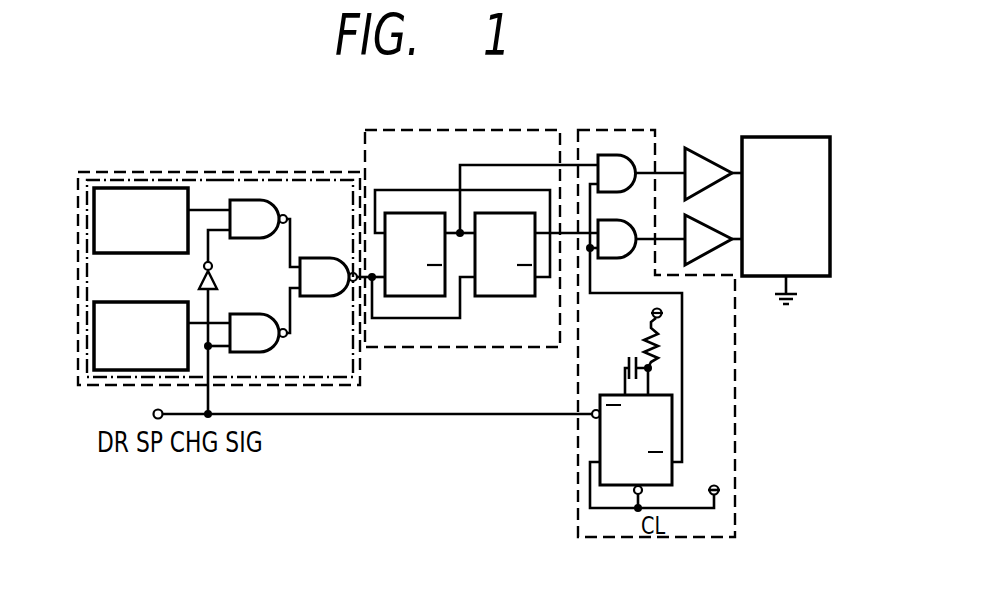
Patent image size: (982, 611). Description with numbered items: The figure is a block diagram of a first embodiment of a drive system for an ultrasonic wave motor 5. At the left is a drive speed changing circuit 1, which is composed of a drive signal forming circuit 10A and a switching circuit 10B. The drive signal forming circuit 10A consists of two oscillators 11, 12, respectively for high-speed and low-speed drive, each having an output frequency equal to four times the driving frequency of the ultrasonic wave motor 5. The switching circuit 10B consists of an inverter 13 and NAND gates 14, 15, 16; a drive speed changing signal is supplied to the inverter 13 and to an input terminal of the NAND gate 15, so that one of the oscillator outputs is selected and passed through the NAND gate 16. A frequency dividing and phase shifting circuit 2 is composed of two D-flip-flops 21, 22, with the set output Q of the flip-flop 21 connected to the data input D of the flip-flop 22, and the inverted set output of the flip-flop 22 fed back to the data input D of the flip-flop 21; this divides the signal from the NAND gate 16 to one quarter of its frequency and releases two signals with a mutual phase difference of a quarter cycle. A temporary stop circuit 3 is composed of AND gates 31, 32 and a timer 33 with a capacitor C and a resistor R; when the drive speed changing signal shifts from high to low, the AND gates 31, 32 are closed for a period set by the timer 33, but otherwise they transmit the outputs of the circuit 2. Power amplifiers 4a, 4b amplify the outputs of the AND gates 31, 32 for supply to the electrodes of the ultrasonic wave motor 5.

The drive speed changing circuit 1 is at (128, 172).
The drive signal forming circuit 10A is at (80, 206).
The switching circuit 10B is at (262, 176).
The oscillator 11 is at (134, 255).
The oscillator 12 is at (146, 302).
The inverter 13 is at (218, 278).
The NAND gate 14 is at (270, 204).
The NAND gate 15 is at (268, 349).
The NAND gate 16 is at (312, 258).
The frequency dividing and phase shifting circuit 2 is at (524, 130).
The D-flip-flop 21 is at (406, 213).
The D-flip-flop 22 is at (512, 296).
The temporary stop circuit 3 is at (622, 130).
The AND gate 31 is at (618, 160).
The AND gate 32 is at (617, 224).
The power amplifier 4a is at (702, 160).
The power amplifier 4b is at (696, 229).
The ultrasonic wave motor 5 is at (790, 137).
The timer 33 is at (610, 395).